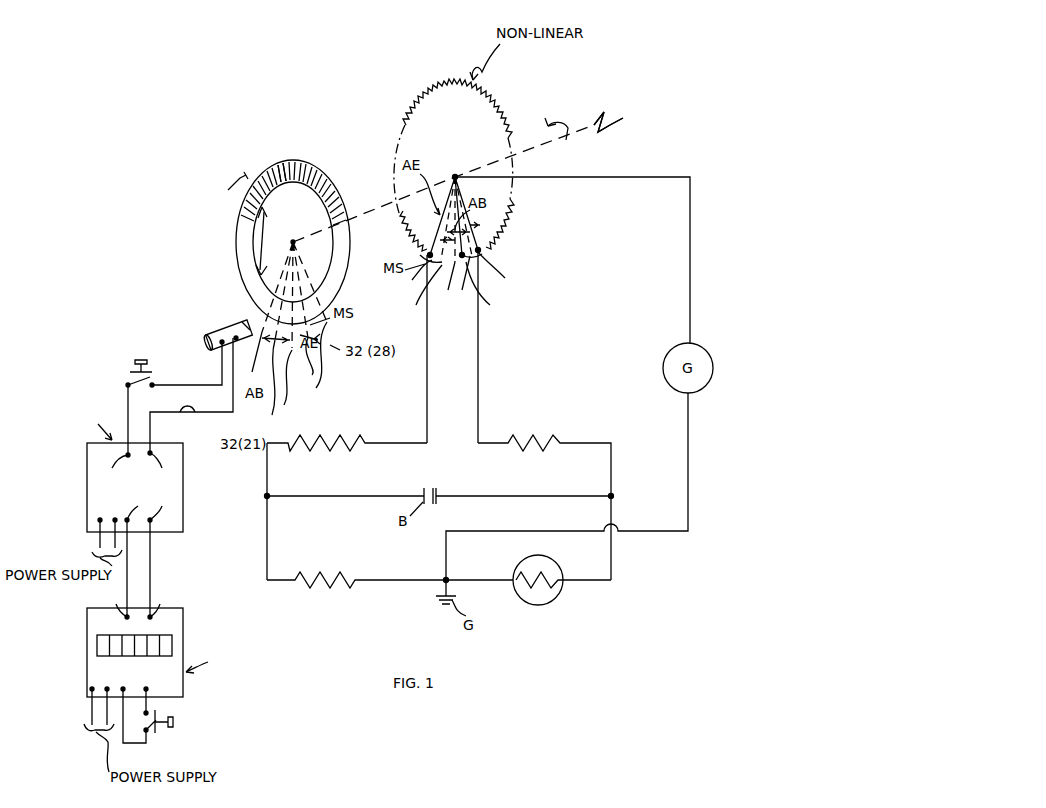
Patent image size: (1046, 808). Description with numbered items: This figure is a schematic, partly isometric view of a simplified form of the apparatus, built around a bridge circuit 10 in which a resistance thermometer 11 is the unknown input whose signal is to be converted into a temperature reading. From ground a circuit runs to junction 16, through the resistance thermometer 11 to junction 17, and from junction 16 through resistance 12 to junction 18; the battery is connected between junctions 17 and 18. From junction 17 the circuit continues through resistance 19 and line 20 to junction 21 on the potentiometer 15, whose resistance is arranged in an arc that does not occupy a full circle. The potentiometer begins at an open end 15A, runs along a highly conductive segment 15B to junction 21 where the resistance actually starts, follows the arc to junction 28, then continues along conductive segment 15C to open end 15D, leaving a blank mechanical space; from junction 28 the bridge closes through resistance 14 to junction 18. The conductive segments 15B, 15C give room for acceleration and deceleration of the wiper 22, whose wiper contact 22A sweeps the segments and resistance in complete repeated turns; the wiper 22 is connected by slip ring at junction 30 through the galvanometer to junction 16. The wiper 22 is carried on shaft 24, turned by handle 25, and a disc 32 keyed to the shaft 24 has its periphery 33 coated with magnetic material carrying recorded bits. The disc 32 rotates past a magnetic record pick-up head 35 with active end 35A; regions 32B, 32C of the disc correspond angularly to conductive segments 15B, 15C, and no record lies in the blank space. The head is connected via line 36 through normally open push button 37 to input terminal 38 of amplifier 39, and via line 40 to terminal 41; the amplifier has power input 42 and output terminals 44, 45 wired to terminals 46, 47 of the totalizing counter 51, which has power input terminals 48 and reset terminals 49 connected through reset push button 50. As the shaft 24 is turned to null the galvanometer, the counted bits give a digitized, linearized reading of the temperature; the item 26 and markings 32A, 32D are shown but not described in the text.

The bridge circuit 10 is at (500, 427).
The resistance thermometer 11 is at (552, 596).
The resistance element 12 is at (327, 588).
The resistance element 14 is at (326, 444).
The potentiometer 15 is at (515, 210).
The open end 15A is at (492, 290).
The conductive segment 15B is at (505, 273).
The conductive segment 15C is at (414, 282).
The open end 15D is at (416, 300).
The junction 16 is at (448, 579).
The junction 17 is at (613, 497).
The junction 18 is at (262, 499).
The resistance 19 is at (558, 442).
The line 20 is at (480, 368).
The junction 21 is at (485, 254).
The wiper 22 is at (458, 176).
The wiper contact 22A is at (468, 262).
The shaft 24 is at (374, 205).
The handle 25 is at (598, 114).
The rotation direction 26 is at (564, 118).
The junction 28 is at (428, 258).
The junction 30 is at (454, 175).
The disc 32 is at (302, 158).
The scale line 32A is at (290, 370).
The disc segment 32B is at (283, 385).
The disc segment 32C is at (322, 362).
The scale line 32D is at (330, 361).
The periphery 33 is at (318, 192).
The magnetic record pick-up head 35 is at (228, 325).
The active end 35A is at (246, 326).
The line 36 is at (186, 378).
The push button 37 is at (131, 381).
The input terminal 38 is at (117, 434).
The amplifier 39 is at (80, 480).
The line 40 is at (200, 415).
The terminal 41 is at (159, 467).
The power input 42 is at (110, 520).
The output terminal 44 is at (129, 554).
The output terminal 45 is at (157, 554).
The terminal 46 is at (110, 605).
The terminal 47 is at (160, 605).
The power input terminals 48 is at (98, 688).
The reset terminals 49 is at (136, 690).
The reset push button 50 is at (165, 733).
The read-out counter 51 is at (194, 634).